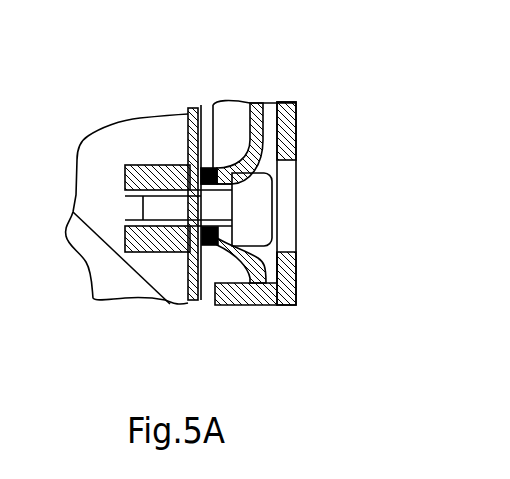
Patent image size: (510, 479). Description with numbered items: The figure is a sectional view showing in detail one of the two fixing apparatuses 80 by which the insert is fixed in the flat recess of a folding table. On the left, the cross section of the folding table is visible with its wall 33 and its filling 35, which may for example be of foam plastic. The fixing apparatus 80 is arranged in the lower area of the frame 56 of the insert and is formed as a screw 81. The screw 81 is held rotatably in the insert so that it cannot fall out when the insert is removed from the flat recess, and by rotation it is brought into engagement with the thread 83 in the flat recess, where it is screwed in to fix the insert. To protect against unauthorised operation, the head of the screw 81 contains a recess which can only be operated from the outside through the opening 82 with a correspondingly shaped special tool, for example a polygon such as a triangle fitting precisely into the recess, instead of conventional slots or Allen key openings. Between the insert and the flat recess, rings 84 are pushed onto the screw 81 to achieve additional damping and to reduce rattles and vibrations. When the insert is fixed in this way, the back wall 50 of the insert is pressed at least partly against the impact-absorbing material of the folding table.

The filling 35 is at (92, 180).
The thread 83 is at (186, 163).
The wall 33 is at (197, 103).
The back wall 50 is at (255, 101).
The opening 82 is at (292, 180).
The screw 81 is at (262, 215).
The frame 56 is at (290, 273).
The ring 84 is at (213, 246).
The fixing apparatus 80 is at (282, 227).